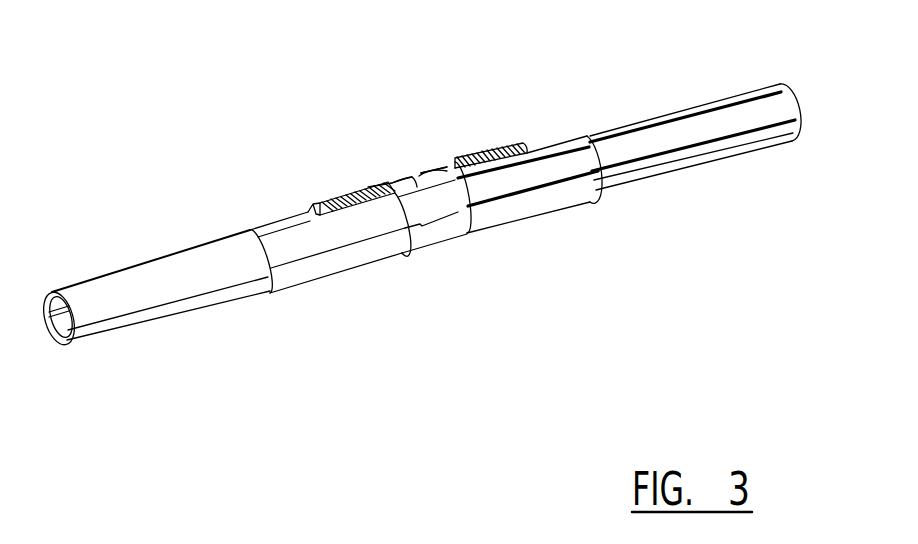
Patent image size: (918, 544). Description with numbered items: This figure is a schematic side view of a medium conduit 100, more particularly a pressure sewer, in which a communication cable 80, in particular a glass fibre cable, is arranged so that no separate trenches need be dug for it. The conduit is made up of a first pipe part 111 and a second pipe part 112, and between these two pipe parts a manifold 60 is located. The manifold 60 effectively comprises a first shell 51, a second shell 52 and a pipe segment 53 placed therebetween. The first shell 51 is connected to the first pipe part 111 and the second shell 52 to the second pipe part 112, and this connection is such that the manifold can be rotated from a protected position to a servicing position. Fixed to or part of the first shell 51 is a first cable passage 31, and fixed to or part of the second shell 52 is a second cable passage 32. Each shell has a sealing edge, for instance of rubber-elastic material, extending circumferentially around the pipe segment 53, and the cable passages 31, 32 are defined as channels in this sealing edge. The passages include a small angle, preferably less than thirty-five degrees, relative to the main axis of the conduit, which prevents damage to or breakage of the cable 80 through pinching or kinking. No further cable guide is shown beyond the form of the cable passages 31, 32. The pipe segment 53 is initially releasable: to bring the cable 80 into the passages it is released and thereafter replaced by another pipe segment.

The medium conduit 100 is at (128, 150).
The first pipe part 111 is at (140, 305).
The second pipe part 112 is at (680, 155).
The manifold 60 is at (593, 260).
The first shell 51 is at (333, 262).
The second shell 52 is at (530, 207).
The pipe segment 53 is at (433, 233).
The communication cable 80 is at (424, 173).
The first cable passage 31 is at (392, 152).
The second cable passage 32 is at (431, 150).